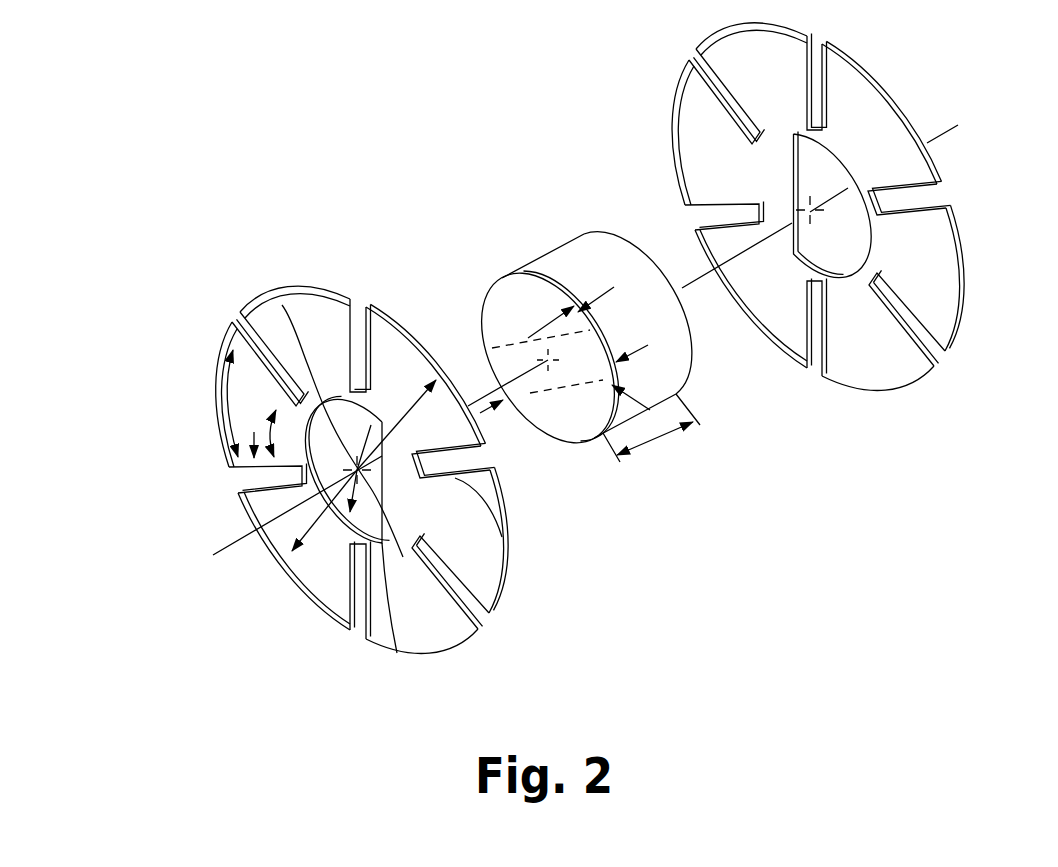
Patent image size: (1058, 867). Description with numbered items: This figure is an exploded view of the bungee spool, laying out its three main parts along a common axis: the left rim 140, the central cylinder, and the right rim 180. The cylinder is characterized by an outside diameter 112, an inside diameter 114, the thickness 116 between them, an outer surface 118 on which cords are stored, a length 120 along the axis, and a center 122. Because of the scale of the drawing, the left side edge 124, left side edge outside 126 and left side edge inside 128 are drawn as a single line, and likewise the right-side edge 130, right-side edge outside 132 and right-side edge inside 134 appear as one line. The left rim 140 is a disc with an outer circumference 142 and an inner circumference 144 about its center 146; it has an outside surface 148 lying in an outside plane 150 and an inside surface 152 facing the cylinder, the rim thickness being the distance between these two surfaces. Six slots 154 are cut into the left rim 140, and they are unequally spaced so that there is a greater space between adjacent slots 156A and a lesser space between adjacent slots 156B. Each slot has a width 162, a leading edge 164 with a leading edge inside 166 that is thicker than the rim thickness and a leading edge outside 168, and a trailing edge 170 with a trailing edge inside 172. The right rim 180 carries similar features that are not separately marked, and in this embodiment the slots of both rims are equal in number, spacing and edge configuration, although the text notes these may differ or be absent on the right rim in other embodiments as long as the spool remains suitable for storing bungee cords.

The outside diameter 112 is at (481, 330).
The inside diameter 114 is at (542, 325).
The thickness 116 is at (603, 296).
The outer surface 118 is at (598, 252).
The length 120 is at (688, 440).
The center 122 is at (497, 340).
The left side edge 124 is at (592, 441).
The left side edge outside 126 is at (548, 357).
The left side edge inside 128 is at (548, 357).
The right-side edge 130 is at (697, 335).
The right-side edge outside 132 is at (638, 313).
The right-side edge inside 134 is at (638, 313).
The left rim 140 is at (170, 350).
The outer circumference 142 is at (300, 556).
The inner circumference 144 is at (435, 653).
The center 146 is at (282, 305).
The outside surface 148 is at (255, 377).
The outside plane 150 is at (360, 652).
The inside surface 152 is at (315, 283).
The slots 154 is at (222, 483).
The greater space between adjacent slots 156A is at (274, 417).
The lesser space between adjacent slots 156B is at (240, 398).
The width 162 is at (235, 492).
The leading edge 164 is at (368, 642).
The leading edge inside 166 is at (403, 557).
The leading edge outside 168 is at (370, 314).
The trailing edge 170 is at (364, 303).
The trailing edge inside 172 is at (372, 312).
The right rim 180 is at (878, 79).